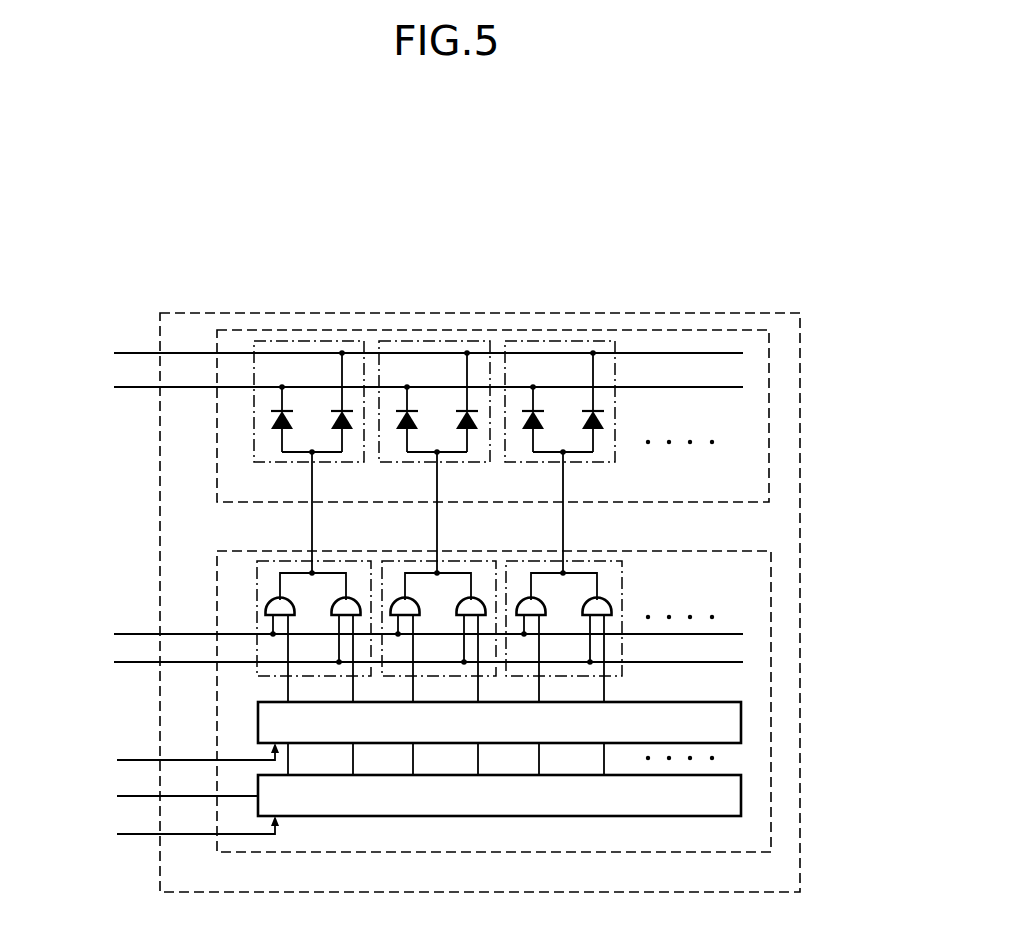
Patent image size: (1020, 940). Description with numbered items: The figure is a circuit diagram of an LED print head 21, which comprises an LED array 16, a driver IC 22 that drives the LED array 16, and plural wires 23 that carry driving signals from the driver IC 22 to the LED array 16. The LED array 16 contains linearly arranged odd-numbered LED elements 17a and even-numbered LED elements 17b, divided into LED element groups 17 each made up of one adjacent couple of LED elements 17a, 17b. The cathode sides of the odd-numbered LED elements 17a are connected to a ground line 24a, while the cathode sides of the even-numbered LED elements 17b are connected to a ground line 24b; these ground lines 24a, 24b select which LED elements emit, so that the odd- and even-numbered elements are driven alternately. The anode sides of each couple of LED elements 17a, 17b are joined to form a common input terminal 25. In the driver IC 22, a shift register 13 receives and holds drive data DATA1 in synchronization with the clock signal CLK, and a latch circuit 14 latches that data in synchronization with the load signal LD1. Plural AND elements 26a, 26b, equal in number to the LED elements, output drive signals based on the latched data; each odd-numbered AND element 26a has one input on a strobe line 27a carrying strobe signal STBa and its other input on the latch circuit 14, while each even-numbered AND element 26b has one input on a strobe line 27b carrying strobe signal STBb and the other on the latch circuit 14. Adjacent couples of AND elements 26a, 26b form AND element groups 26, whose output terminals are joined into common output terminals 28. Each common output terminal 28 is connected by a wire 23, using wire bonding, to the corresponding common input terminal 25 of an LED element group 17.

The shift register 13 is at (742, 793).
The latch circuit 14 is at (742, 722).
The LED array 16 is at (770, 404).
The LED element group 17 is at (310, 340).
The odd-numbered LED element 17a is at (268, 428).
The even-numbered LED element 17b is at (343, 434).
The LED print head 21 is at (800, 331).
The driver IC 22 is at (772, 600).
The wire 23 is at (310, 522).
The ground line 24a is at (135, 392).
The ground line 24b is at (135, 351).
The common input terminal 25 is at (312, 442).
The AND element group 26 is at (256, 553).
The odd-numbered AND element 26a is at (266, 608).
The even-numbered AND element 26b is at (347, 598).
The strobe line 27a is at (135, 632).
The strobe line 27b is at (136, 666).
The common output terminal 28 is at (312, 582).